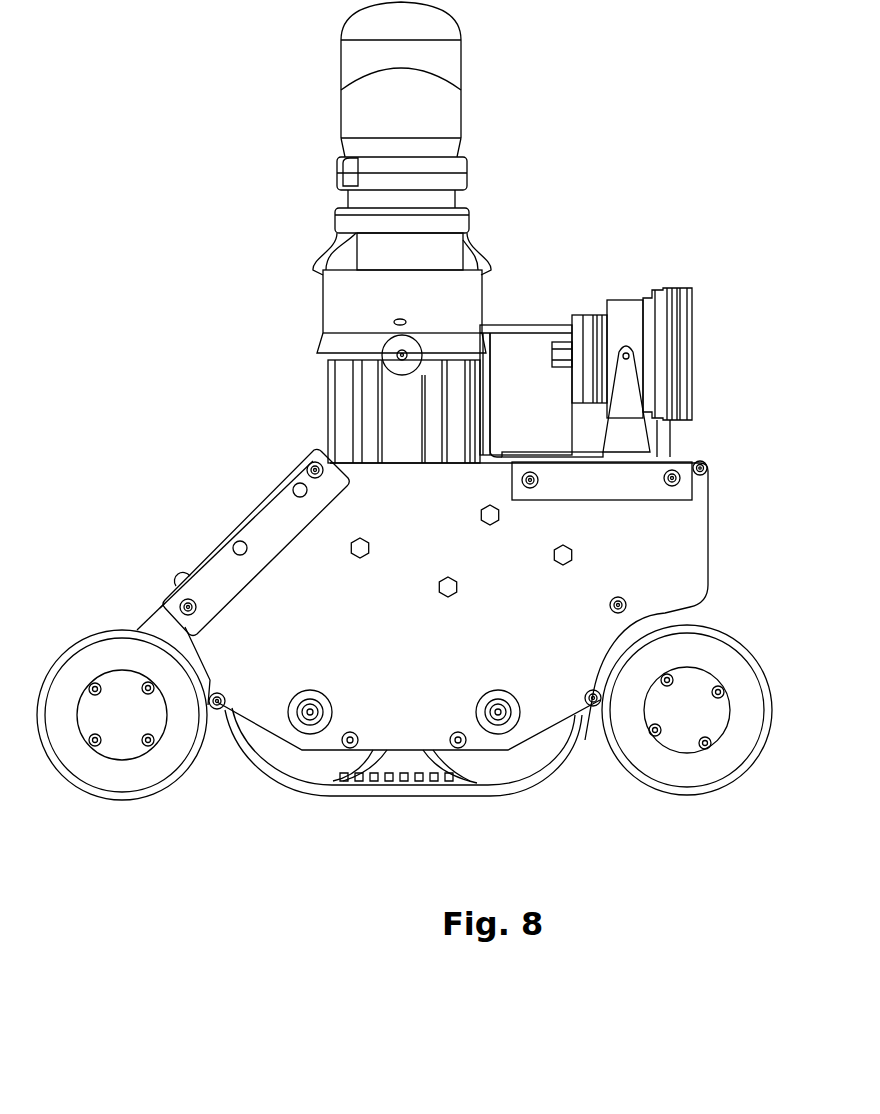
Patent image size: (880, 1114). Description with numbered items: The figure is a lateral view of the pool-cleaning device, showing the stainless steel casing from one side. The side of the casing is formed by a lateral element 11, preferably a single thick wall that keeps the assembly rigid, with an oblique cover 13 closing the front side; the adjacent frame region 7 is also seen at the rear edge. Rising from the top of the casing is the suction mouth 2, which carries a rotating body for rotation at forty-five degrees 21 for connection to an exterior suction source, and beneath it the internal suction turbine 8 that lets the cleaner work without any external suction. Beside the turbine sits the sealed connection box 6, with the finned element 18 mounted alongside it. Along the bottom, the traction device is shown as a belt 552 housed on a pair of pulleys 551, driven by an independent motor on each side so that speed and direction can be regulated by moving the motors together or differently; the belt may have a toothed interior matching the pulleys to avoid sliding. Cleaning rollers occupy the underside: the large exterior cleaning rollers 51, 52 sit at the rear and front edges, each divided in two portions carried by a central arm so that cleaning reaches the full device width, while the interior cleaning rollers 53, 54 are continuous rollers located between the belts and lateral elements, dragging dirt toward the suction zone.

The body for rotation at 45° 21 is at (345, 40).
The suction mouth 2 is at (325, 245).
The sealed connection box 6 is at (513, 350).
The heat sink / fins 18 is at (672, 290).
The suction turbine 8 is at (345, 408).
The oblique cover 13 is at (250, 520).
The lateral elements 11 is at (687, 517).
The frame 7 is at (708, 487).
The exterior cleaning roller 52 is at (105, 778).
The exterior cleaning roller 51 is at (713, 773).
The interior cleaning roller 54 is at (292, 797).
The interior cleaning roller 53 is at (537, 783).
The pulleys 551 is at (317, 763).
The belt 552 is at (403, 787).